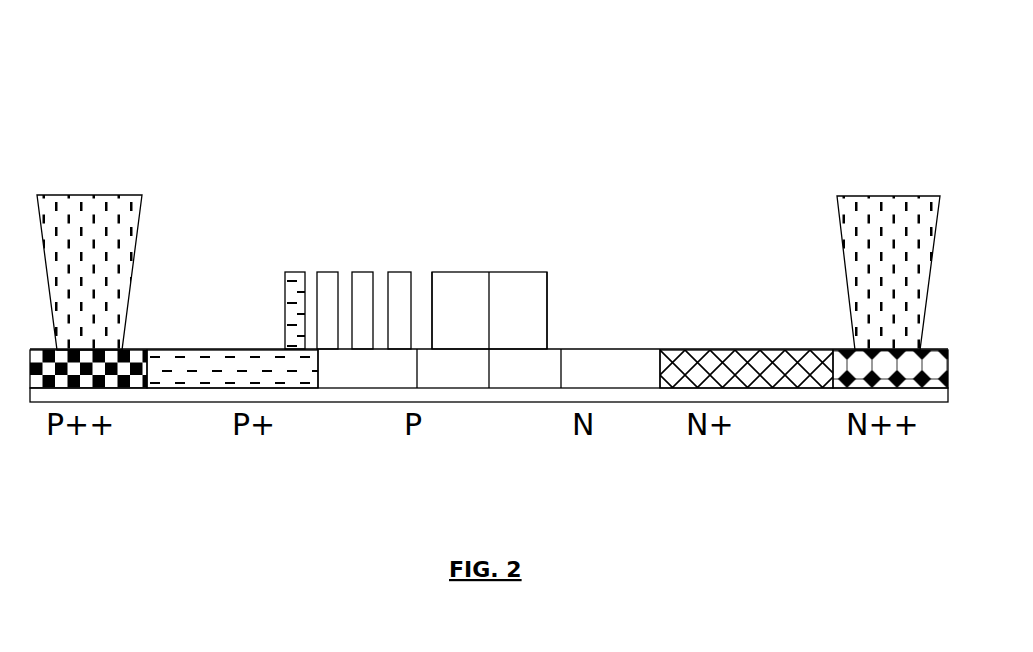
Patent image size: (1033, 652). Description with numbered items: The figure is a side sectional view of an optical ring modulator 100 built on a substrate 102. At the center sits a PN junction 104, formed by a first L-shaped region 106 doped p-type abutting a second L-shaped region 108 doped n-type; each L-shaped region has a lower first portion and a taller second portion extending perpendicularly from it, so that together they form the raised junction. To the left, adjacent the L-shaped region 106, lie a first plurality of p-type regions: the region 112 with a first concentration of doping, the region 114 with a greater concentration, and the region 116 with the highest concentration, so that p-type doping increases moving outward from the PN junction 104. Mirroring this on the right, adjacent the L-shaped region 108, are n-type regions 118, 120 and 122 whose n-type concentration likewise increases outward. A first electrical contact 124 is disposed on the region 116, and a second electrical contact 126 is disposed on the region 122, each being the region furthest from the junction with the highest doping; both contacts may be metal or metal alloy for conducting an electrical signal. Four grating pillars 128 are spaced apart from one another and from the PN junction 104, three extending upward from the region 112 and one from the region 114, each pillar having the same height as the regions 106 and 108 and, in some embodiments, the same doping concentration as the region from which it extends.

The optical ring modulator 100 is at (253, 82).
The substrate 102 is at (520, 403).
The PN junction 104 is at (547, 245).
The first L-shaped region 106 is at (432, 297).
The second L-shaped region 108 is at (547, 297).
The region 112 is at (370, 389).
The region 114 is at (222, 349).
The region 116 is at (133, 349).
The region 118 is at (601, 349).
The region 120 is at (695, 349).
The region 122 is at (850, 349).
The first electrical contact 124 is at (133, 234).
The second electrical contact 126 is at (838, 229).
The grating pillars 128 is at (298, 270).